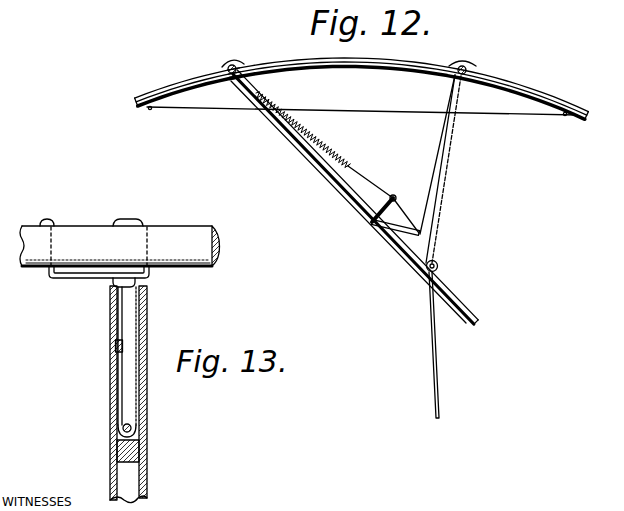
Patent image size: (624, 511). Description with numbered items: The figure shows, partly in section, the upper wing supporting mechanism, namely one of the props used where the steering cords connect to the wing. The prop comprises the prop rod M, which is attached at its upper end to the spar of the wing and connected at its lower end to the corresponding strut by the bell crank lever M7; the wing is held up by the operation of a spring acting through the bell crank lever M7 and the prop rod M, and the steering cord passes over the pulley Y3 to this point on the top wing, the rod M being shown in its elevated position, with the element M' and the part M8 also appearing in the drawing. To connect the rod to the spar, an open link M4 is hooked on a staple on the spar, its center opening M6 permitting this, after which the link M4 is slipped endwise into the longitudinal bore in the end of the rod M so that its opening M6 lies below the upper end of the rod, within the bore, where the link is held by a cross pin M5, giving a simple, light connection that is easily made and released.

In FIG. 12, the bow tip section M' is at (188, 86).
In FIG. 12, the open link M4 is at (464, 66).
In FIG. 13, the open link M4 is at (203, 216).
In FIG. 12, the strut bar M8 is at (292, 128).
In FIG. 12, the bell crank lever M7 is at (392, 233).
In FIG. 12, the prop rod M is at (431, 246).
In FIG. 13, the prop rod M is at (106, 394).
In FIG. 12, the pulley Y3 is at (439, 264).
In FIG. 13, the center opening of link M6 is at (93, 214).
In FIG. 13, the cross pin M5 is at (137, 432).